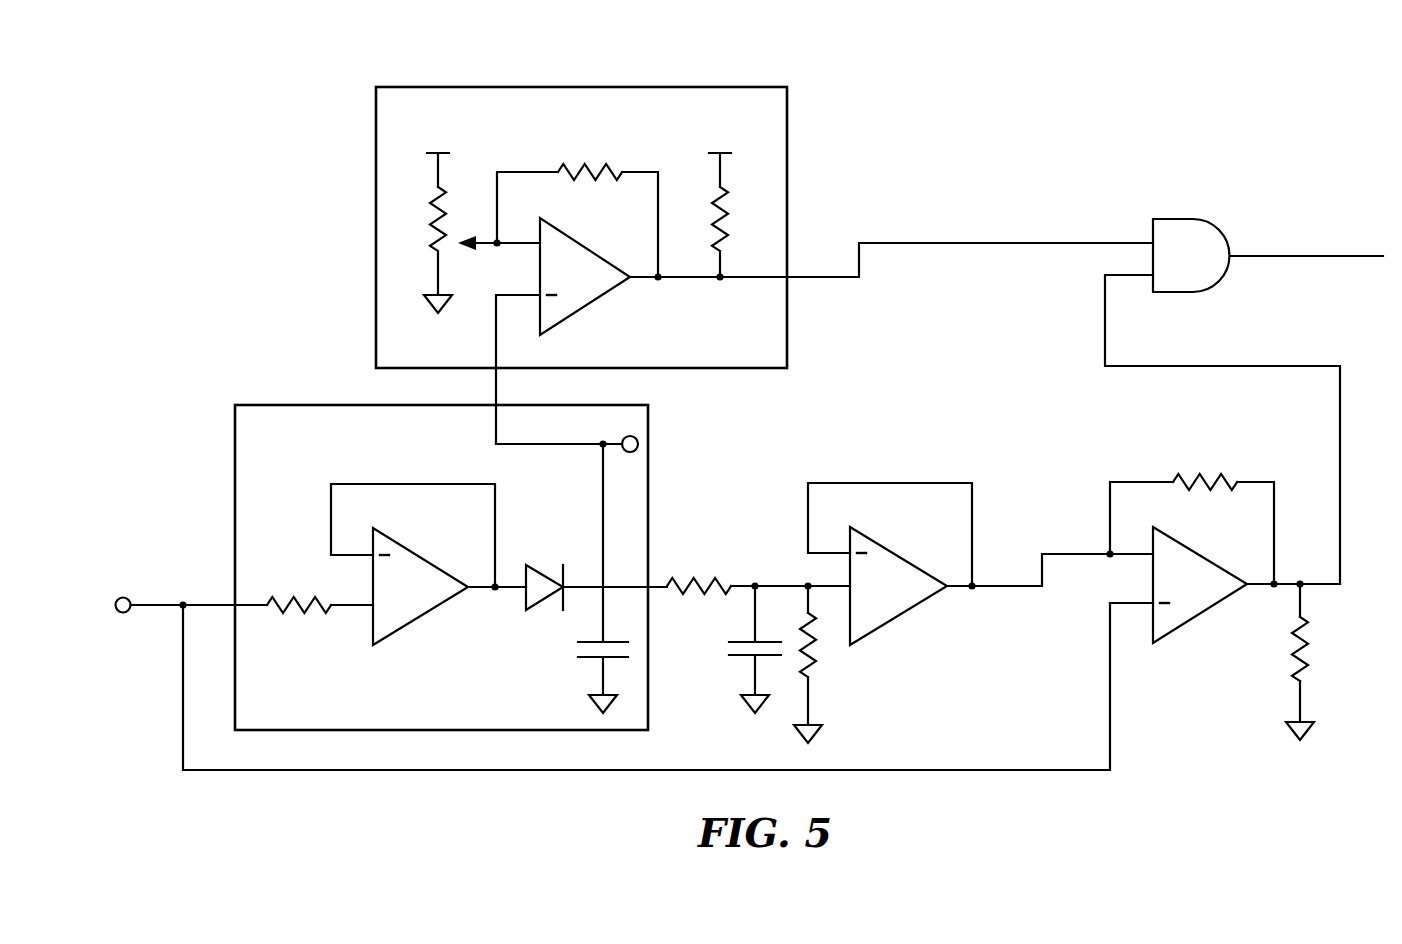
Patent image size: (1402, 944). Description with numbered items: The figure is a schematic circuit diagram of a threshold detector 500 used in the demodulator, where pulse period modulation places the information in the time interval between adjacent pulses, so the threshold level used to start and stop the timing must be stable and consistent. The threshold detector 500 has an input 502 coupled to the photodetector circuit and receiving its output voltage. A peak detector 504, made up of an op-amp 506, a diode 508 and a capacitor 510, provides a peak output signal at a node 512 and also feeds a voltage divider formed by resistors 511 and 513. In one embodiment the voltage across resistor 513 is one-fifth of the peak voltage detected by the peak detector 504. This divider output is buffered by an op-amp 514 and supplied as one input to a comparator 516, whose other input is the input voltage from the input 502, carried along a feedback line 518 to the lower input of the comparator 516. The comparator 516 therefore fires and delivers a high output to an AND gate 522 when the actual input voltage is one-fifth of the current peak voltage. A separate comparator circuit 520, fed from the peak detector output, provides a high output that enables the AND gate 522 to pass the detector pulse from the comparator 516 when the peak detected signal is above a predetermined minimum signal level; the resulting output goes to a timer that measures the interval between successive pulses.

The threshold detector 500 is at (975, 149).
The input 502 is at (123, 596).
The peak detector 504 is at (288, 449).
The op-amp 506 is at (418, 617).
The diode 508 is at (548, 569).
The capacitor 510 is at (577, 648).
The resistor 511 is at (695, 576).
The node 512 is at (639, 445).
The resistor 513 is at (817, 657).
The op-amp 514 is at (897, 620).
The comparator 516 is at (1200, 615).
The feedback line 518 is at (933, 769).
The comparator circuit 520 is at (704, 87).
The AND gate 522 is at (1205, 217).